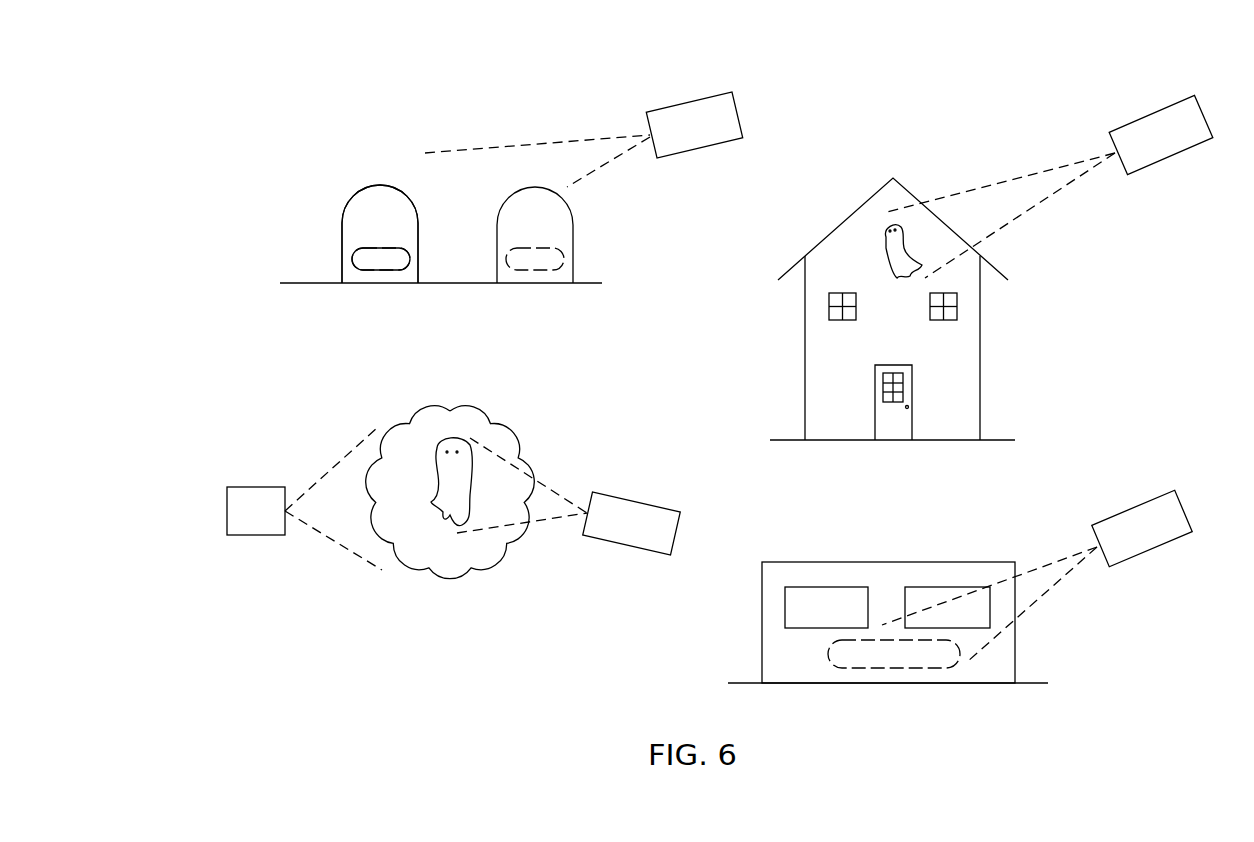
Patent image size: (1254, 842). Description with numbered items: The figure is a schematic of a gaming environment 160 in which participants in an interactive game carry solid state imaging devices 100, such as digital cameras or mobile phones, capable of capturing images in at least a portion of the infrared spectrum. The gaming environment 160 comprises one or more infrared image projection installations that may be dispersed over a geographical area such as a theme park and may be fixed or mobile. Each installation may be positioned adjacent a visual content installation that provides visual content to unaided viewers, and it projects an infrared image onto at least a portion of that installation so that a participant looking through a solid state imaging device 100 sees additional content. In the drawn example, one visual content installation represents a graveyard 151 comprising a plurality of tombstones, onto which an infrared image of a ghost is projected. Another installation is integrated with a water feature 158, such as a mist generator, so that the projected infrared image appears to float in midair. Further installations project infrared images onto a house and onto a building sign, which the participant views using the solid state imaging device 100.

The solid state imaging device 100 is at (258, 537).
The graveyard 151 is at (306, 270).
The water feature 158 is at (505, 425).
The gaming environment 160 is at (292, 100).